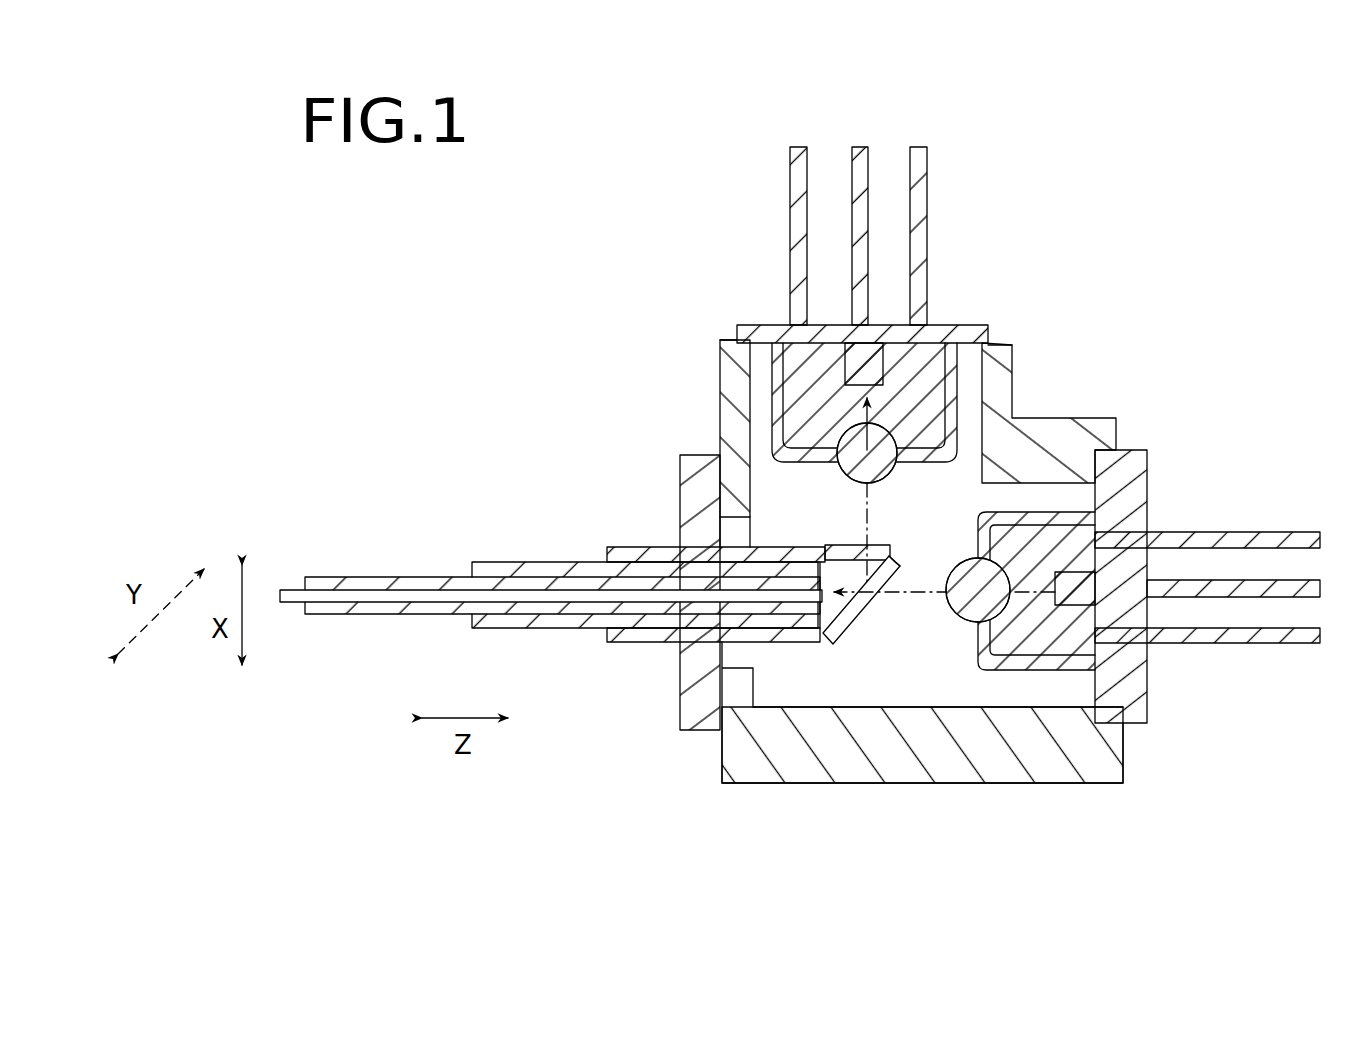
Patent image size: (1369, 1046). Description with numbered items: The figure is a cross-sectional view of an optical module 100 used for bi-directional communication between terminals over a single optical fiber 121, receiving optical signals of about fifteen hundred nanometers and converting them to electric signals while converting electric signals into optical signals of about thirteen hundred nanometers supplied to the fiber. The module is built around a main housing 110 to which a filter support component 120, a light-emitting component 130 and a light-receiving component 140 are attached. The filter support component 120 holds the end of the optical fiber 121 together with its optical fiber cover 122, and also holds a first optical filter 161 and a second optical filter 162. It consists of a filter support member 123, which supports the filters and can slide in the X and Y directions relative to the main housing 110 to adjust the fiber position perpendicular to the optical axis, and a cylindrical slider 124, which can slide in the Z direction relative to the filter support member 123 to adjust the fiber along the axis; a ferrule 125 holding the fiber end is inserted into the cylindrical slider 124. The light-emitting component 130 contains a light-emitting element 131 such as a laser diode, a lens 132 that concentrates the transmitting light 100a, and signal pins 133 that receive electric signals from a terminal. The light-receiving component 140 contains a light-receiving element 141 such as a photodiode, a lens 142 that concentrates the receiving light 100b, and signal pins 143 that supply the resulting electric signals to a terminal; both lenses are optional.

The optical module 100 is at (1132, 157).
The transmitting light 100a is at (910, 598).
The receiving light 100b is at (862, 506).
The main housing 110 is at (720, 388).
The filter support component 120 is at (559, 591).
The optical fiber 121 is at (292, 604).
The optical fiber cover 122 is at (388, 617).
The filter support member 123 is at (682, 722).
The cylindrical slider 124 is at (500, 630).
The ferrule 125 is at (822, 643).
The light-emitting component 130 is at (1133, 593).
The light-emitting element 131 is at (1058, 575).
The lens 132 is at (1005, 612).
The signal pins 133 is at (1210, 630).
The light-receiving component 140 is at (890, 269).
The light-receiving element 141 is at (884, 375).
The lens 142 is at (845, 438).
The signal pins 143 is at (918, 147).
The first optical filter 161 is at (850, 646).
The second optical filter 162 is at (880, 545).